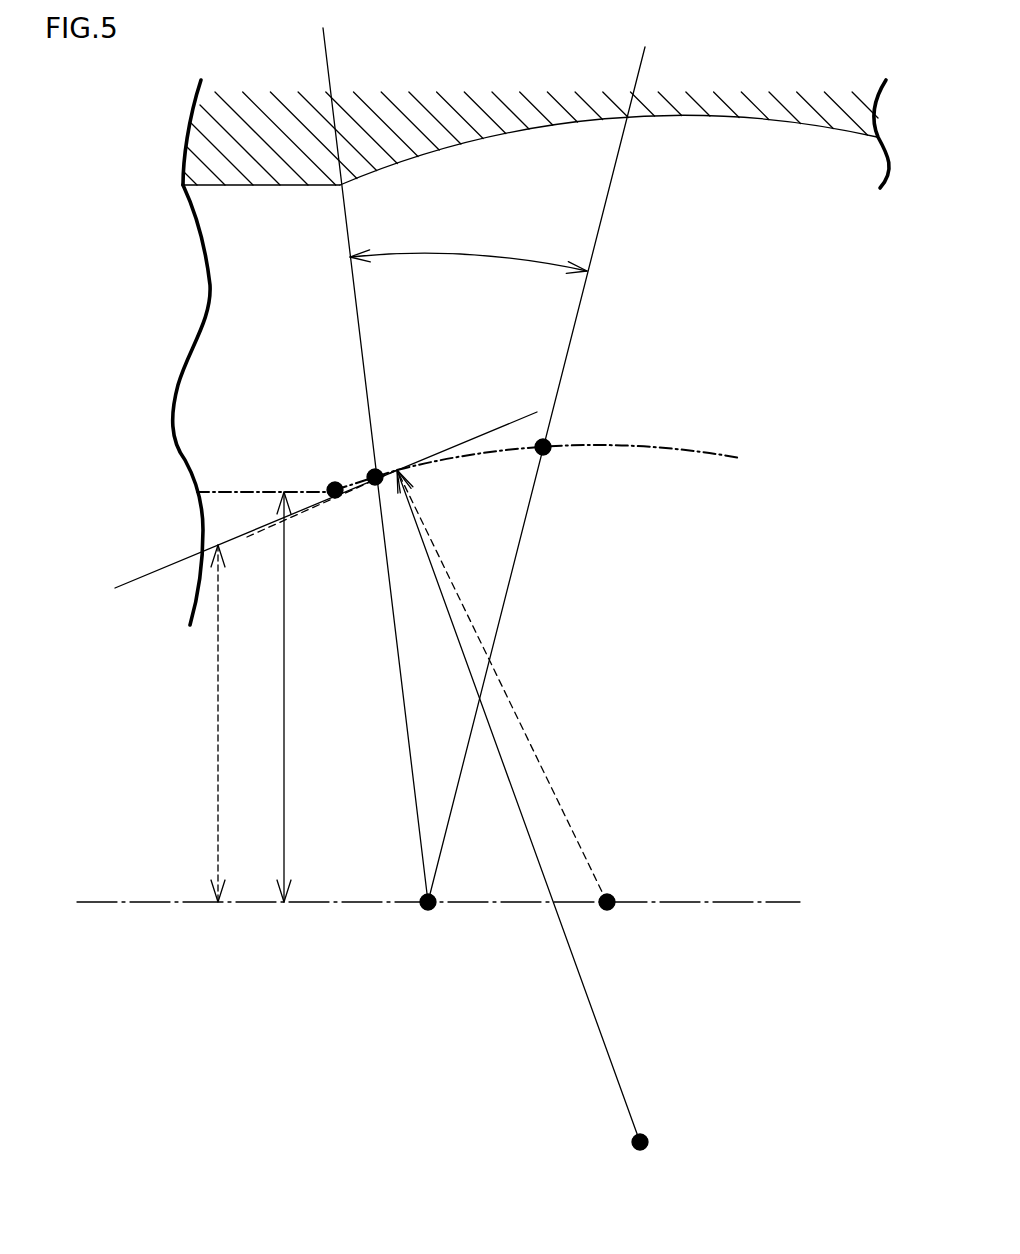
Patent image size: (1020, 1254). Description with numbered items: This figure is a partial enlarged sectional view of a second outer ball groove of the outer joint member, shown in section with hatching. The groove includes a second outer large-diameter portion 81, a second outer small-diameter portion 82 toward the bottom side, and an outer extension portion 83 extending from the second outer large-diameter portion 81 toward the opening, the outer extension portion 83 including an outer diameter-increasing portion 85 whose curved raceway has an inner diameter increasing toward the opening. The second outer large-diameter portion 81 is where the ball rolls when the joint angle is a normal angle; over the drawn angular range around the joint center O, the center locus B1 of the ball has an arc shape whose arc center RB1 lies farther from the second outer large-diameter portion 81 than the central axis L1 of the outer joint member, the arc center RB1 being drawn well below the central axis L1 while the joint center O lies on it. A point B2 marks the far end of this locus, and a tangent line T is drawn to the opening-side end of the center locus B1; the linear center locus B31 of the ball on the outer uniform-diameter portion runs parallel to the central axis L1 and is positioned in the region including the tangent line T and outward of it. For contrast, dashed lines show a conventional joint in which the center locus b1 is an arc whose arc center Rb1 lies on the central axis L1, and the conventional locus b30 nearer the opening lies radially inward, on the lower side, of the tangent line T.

The outer diameter-increasing portion 85 is at (276, 182).
The outer extension portion 83 is at (333, 121).
The second outer large-diameter portion 81 is at (504, 132).
The second outer small-diameter portion 82 is at (726, 118).
The tangent line T is at (156, 571).
The center locus B1 is at (433, 455).
The point B2 is at (612, 443).
The center locus B31 is at (278, 486).
The center locus b1 is at (440, 472).
The center locus b30 is at (322, 515).
The arc center Rb1 is at (614, 896).
The arc center RB1 is at (648, 1146).
The central axis L1 is at (170, 903).
The joint center O is at (425, 907).